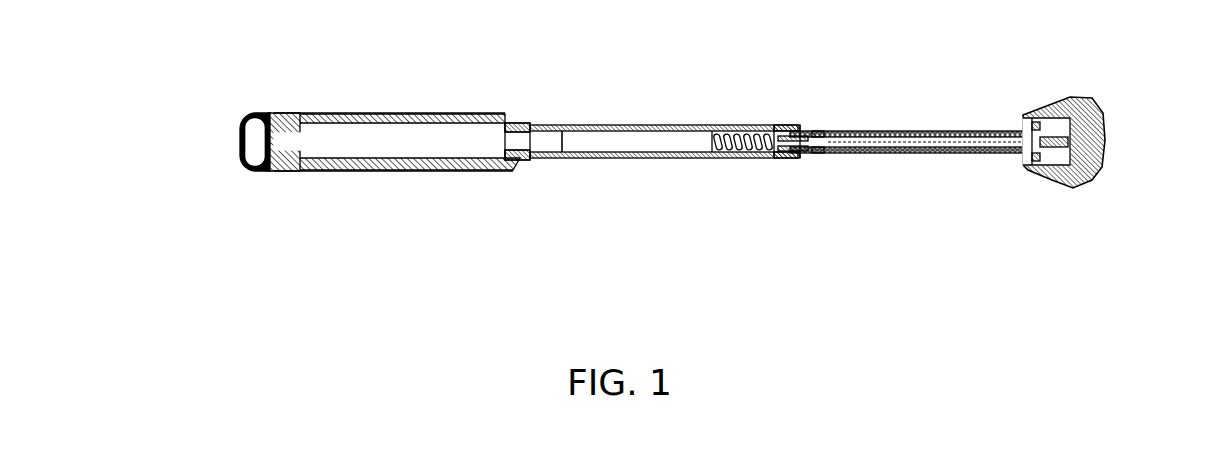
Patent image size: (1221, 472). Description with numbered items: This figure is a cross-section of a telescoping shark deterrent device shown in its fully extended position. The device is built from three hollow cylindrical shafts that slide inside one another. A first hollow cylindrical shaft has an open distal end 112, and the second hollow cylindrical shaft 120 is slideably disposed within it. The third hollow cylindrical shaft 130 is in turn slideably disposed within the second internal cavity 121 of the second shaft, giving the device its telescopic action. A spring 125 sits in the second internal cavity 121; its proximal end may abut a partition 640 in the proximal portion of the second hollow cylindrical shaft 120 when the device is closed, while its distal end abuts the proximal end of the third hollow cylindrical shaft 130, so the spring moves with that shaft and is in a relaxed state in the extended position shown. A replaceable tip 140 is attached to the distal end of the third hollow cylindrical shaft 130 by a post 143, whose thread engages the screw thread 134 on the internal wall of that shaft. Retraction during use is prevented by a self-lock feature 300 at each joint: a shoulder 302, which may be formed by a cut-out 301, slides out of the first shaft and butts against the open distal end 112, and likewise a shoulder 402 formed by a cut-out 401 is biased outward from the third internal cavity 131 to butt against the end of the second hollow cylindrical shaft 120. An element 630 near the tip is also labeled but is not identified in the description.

The open distal end 112 is at (505, 165).
The self-lock feature 300 is at (546, 98).
The shoulder 302 is at (527, 116).
The cut-out 301 is at (525, 162).
The second hollow cylindrical shaft 120 is at (588, 121).
The partition 640 is at (562, 166).
The second internal cavity 121 is at (595, 150).
The spring 125 is at (698, 153).
The shoulder 402 is at (778, 125).
The cut-out 401 is at (812, 155).
The third hollow cylindrical shaft 130 is at (885, 125).
The third internal cavity 131 is at (898, 152).
The tip 140 is at (1105, 135).
The screw thread 134 is at (1022, 128).
The lower lip 630 is at (1018, 165).
The post 143 is at (1042, 168).